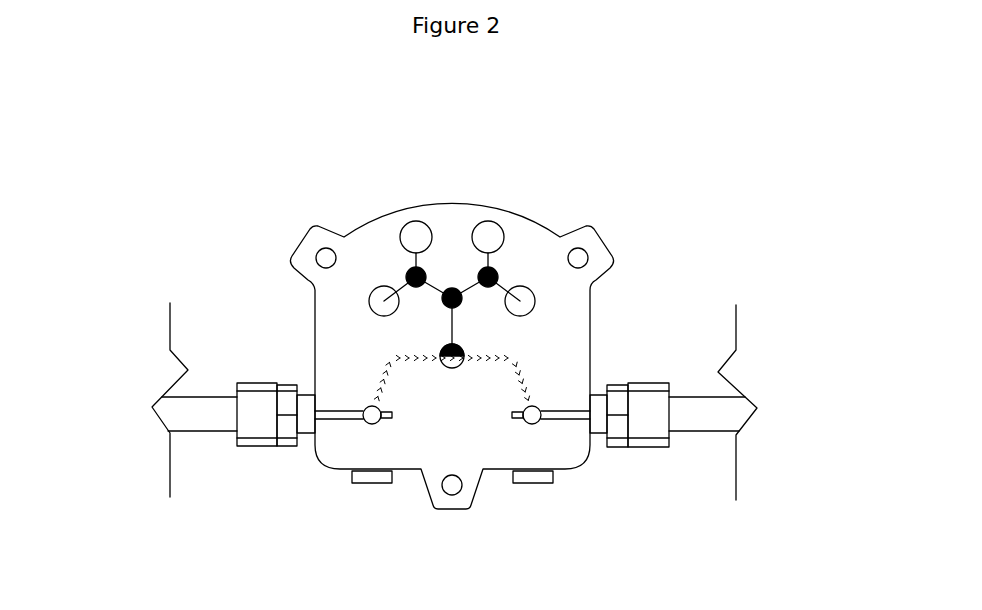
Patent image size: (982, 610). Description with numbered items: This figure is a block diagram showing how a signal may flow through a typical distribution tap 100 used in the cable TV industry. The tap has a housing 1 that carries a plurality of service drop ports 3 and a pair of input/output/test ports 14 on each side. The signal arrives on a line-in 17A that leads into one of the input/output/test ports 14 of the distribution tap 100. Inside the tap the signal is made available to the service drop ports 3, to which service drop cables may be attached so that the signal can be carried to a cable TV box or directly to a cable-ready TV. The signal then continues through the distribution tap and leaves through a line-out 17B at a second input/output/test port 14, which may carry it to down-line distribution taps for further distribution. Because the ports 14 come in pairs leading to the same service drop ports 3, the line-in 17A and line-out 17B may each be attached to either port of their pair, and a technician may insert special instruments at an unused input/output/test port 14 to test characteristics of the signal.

The distribution tap 100 is at (460, 167).
The housing 1 is at (313, 318).
The service drop ports 3 is at (405, 223).
The input/output/test ports 14 is at (307, 392).
The line-in 17A is at (182, 407).
The line-out 17B is at (723, 407).